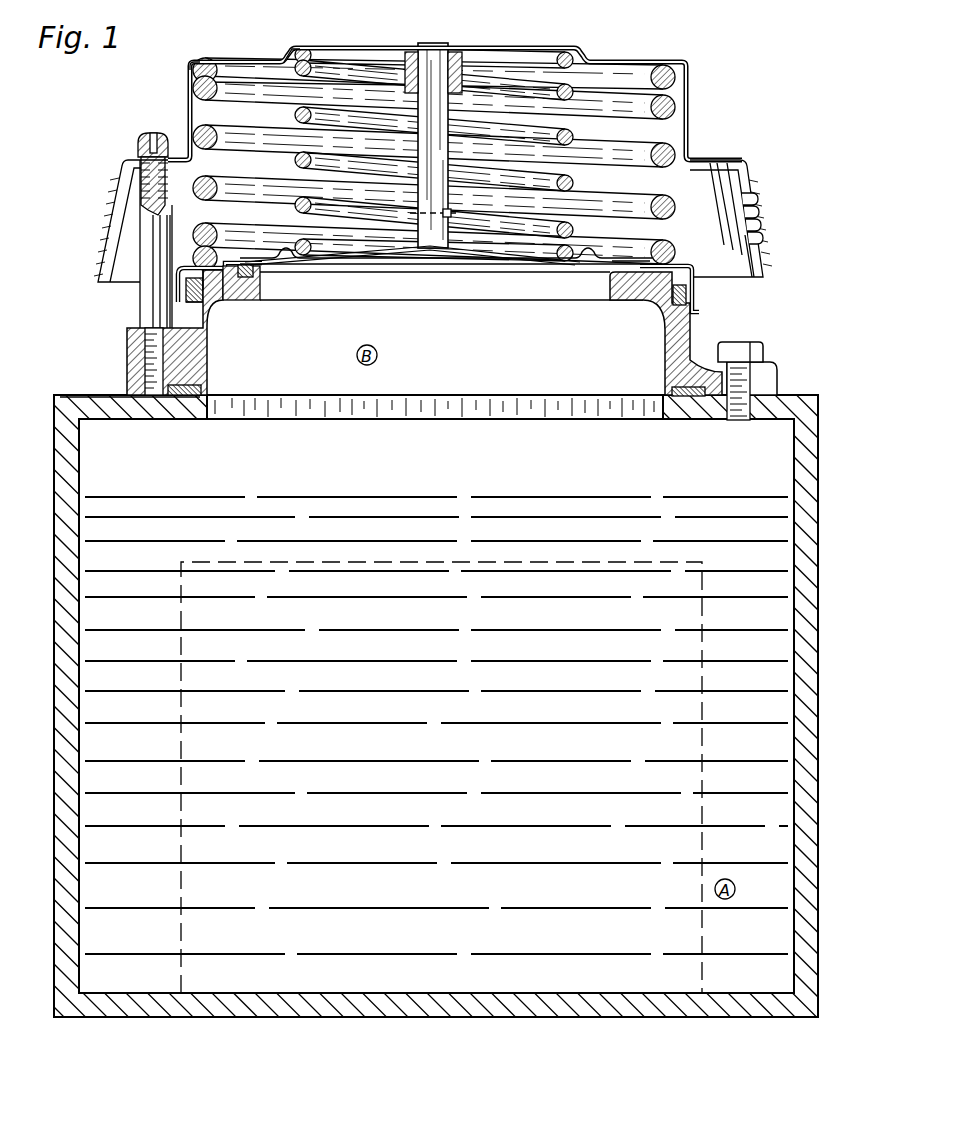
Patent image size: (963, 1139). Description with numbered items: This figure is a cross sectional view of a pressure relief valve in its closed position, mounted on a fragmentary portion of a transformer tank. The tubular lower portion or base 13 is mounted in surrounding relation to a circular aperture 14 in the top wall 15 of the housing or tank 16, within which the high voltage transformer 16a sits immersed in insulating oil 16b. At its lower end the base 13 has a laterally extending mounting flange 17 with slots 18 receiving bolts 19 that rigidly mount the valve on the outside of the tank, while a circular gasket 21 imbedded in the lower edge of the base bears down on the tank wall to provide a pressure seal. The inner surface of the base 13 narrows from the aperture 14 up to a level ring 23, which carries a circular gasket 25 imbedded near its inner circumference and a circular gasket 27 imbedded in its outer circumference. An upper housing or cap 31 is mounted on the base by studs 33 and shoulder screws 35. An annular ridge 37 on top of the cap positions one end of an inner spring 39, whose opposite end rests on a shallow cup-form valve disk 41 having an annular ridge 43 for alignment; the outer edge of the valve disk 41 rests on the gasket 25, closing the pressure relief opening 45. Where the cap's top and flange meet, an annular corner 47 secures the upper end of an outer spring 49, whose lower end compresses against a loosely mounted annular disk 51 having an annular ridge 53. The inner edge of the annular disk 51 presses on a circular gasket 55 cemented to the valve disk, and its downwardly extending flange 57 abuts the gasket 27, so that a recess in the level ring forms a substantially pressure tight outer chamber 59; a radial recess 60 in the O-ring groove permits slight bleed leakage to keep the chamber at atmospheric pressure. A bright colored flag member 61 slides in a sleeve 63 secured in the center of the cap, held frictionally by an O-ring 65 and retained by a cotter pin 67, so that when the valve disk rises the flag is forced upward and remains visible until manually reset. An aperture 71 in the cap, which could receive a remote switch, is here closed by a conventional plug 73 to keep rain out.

The lower portion or base 13 is at (199, 348).
The circular aperture or opening 14 is at (209, 408).
The top wall 15 is at (127, 410).
The housing or tank 16 is at (771, 412).
The high voltage transformer 16a is at (703, 614).
The insulating oil 16b is at (310, 497).
The mounting flange 17 is at (698, 365).
The slots 18 is at (766, 370).
The bolts 19 is at (750, 343).
The circular gasket 21 is at (196, 388).
The level ring 23 is at (256, 300).
The circular gasket 25 is at (252, 277).
The circular gasket 27 is at (185, 292).
The upper housing or cap 31 is at (189, 103).
The studs 33 is at (137, 297).
The shoulder screws 35 is at (140, 145).
The annular ridge 37 is at (288, 55).
The inner spring 39 is at (296, 117).
The valve disk 41 is at (474, 252).
The annular ridge 43 is at (280, 256).
The pressure relief opening 45 is at (451, 307).
The annular corner 47 is at (193, 63).
The outer spring 49 is at (226, 125).
The annular disk 51 is at (181, 266).
The annular ridge 53 is at (224, 246).
The circular gasket 55 is at (621, 260).
The flange 57 is at (696, 304).
The outer chamber 59 is at (212, 288).
The radially recessed groove bottom 60 is at (200, 298).
The flag member 61 is at (441, 150).
The sleeve 63 is at (455, 52).
The O-ring 65 is at (410, 52).
The cotter pin 67 is at (448, 213).
The aperture 71 is at (750, 250).
The plug 73 is at (757, 205).